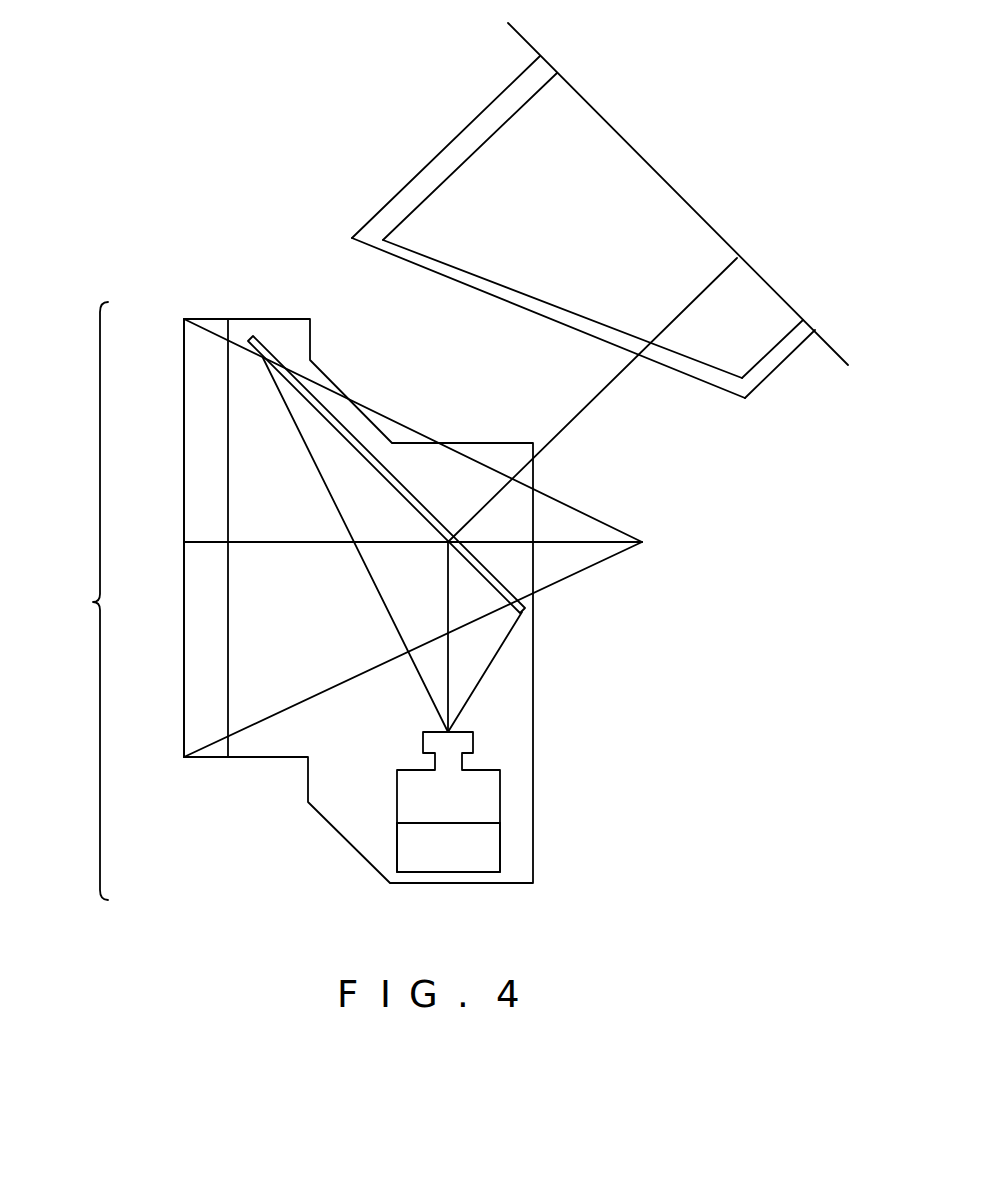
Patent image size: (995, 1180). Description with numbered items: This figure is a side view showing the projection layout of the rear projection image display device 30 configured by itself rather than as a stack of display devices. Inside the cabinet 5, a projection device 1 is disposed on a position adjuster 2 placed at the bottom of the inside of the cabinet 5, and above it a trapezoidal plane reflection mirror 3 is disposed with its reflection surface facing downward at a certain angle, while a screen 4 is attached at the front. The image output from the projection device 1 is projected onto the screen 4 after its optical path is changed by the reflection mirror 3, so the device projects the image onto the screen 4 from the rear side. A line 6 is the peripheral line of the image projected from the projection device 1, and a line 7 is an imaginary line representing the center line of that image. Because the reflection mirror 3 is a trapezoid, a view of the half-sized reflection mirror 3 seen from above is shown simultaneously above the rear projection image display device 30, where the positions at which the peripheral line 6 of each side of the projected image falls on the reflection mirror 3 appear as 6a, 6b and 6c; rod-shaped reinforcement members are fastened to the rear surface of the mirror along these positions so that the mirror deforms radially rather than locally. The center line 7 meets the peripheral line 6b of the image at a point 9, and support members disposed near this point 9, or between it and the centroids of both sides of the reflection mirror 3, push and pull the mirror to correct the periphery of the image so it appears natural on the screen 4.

The projection device 1 is at (482, 797).
The position adjuster 2 is at (482, 848).
The reflection mirror 3 is at (261, 347).
The screen 4 is at (184, 420).
The cabinet 5 is at (535, 703).
The peripheral line 6 is at (603, 268).
The peripheral line of image side 6a is at (458, 166).
The peripheral line of image side 6b is at (526, 306).
The peripheral line of image side 6c is at (773, 350).
The center line 7 is at (590, 542).
The point 9 is at (652, 343).
The rear projection image display device 30 is at (79, 601).